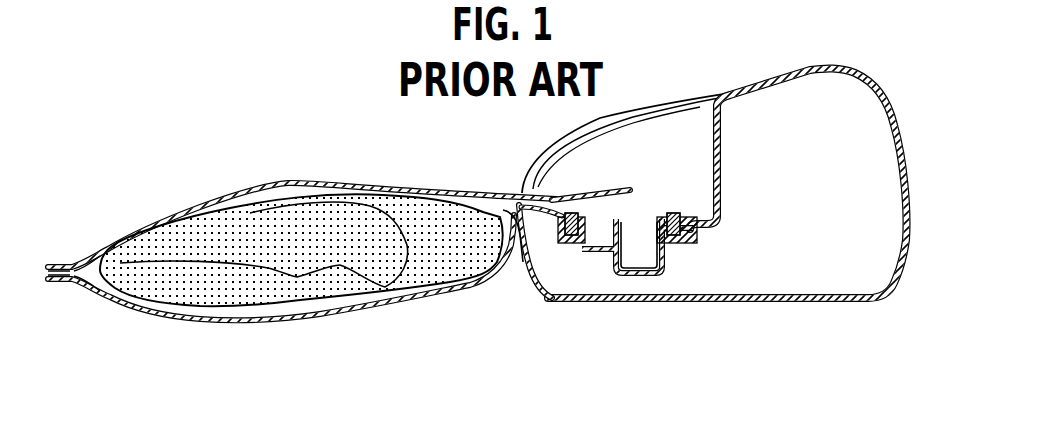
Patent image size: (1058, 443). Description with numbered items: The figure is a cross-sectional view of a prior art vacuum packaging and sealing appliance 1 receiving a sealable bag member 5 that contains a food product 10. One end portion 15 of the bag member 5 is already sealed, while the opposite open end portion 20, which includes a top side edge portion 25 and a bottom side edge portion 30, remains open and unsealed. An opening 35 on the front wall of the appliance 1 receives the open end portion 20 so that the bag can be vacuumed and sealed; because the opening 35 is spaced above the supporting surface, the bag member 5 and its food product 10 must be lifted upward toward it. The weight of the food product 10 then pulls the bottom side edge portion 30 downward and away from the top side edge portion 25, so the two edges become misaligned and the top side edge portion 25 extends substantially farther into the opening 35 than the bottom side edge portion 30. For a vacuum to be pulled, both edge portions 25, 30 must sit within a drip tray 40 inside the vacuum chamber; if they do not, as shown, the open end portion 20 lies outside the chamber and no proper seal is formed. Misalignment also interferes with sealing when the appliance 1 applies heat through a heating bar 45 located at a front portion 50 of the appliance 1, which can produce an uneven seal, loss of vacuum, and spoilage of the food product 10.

The vacuum packaging and sealing appliance 1 is at (879, 93).
The sealable bag member 5 is at (290, 178).
The food product 10 is at (122, 250).
The end portion 15 is at (60, 283).
The open end portion 20 is at (606, 188).
The top side edge portion 25 is at (633, 189).
The bottom side edge portion 30 is at (544, 227).
The opening 35 is at (525, 217).
The drip tray 40 is at (666, 256).
The heating bar 45 is at (602, 252).
The front portion 50 is at (519, 228).